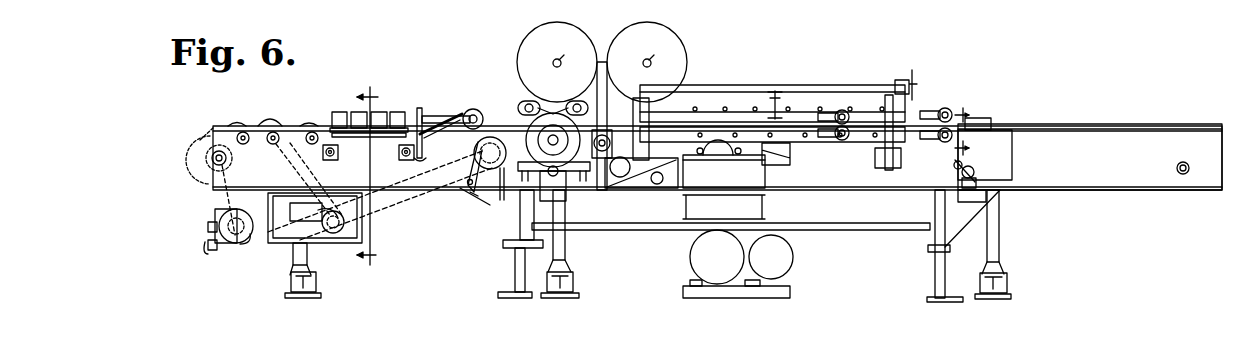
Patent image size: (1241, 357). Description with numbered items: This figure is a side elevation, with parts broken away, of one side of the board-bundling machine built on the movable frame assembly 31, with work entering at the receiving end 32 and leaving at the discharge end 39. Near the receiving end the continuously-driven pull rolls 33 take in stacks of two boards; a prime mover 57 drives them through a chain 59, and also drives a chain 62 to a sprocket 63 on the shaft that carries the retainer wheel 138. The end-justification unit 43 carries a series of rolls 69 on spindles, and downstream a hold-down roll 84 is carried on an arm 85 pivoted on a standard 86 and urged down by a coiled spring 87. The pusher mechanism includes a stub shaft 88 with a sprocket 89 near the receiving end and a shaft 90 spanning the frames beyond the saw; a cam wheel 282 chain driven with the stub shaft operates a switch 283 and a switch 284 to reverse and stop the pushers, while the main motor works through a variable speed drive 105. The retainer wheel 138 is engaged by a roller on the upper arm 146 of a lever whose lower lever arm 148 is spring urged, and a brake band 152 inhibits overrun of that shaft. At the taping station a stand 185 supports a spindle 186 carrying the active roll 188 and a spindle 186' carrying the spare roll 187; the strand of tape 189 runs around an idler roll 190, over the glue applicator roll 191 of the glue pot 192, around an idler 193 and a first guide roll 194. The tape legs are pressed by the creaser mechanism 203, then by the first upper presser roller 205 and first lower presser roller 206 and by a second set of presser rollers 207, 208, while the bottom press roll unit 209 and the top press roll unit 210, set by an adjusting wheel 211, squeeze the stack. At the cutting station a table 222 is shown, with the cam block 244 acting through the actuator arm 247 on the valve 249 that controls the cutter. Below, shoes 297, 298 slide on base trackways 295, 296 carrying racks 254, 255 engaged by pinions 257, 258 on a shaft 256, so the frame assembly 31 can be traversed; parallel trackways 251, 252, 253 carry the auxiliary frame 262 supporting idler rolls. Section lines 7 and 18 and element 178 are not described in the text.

The section line 7- 7 is at (367, 175).
The section line 18- 18 is at (955, 126).
The frame assembly 31 is at (1155, 183).
The receiving end 32 is at (198, 123).
The pull rolls 33 is at (272, 122).
The discharge end 39 is at (1206, 113).
The end-justification unit 43 is at (330, 105).
The prime mover 57 is at (306, 216).
The chain 59 is at (280, 160).
The chain 62 is at (402, 205).
The sprocket 63 is at (474, 140).
The roll 69 is at (401, 110).
The hold-down roll 84 is at (470, 108).
The arm 85 is at (446, 114).
The standard 86 is at (419, 106).
The coiled spring 87 is at (433, 103).
The stub shaft 88 is at (227, 157).
The sprocket 89 is at (192, 166).
The shaft 90 is at (626, 173).
The variable speed drive 105 is at (793, 267).
The retainer wheel 138 is at (522, 128).
The upper arm 146 is at (466, 145).
The lower lever arm 148 is at (468, 193).
The brake band 152 is at (503, 188).
The guide 178 is at (515, 106).
The stand 185 is at (602, 62).
The spindle 186 is at (647, 62).
The spindle 186' is at (560, 51).
The spare roll of bundler tape 187 is at (525, 45).
The active roll 188 is at (683, 48).
The strand of tape 189 is at (670, 160).
The idler roll 190 is at (601, 158).
The glue applicator roll 191 is at (724, 179).
The glue pot 192 is at (763, 175).
The idler 193 is at (796, 149).
The first guide roll 194 is at (676, 105).
The creaser mechanism 203 is at (784, 91).
The first upper presser roller 205 is at (840, 113).
The first lower presser roller 206 is at (842, 142).
The presser roller 207 is at (932, 108).
The presser roller 208 is at (937, 140).
The bottom press roll unit 209 is at (870, 148).
The top press roll unit 210 is at (810, 100).
The adjusting wheel 211 is at (918, 78).
The table 222 is at (1012, 144).
The cam block 244 is at (956, 171).
The actuator arm 247 is at (974, 170).
The valve 249 is at (956, 200).
The trackway 251 is at (317, 281).
The trackway 252 is at (548, 294).
The trackway 253 is at (1006, 281).
The rack 254 is at (504, 250).
The rack 255 is at (970, 252).
The shaft 256 is at (825, 229).
The pinion 257 is at (498, 236).
The pinion 258 is at (987, 243).
The auxiliary frame 262 is at (295, 259).
The cam wheel 282 is at (252, 245).
The switch 283 is at (206, 249).
The switch 284 is at (208, 224).
The base trackway 295 is at (523, 250).
The base trackway 296 is at (940, 272).
The shoe 297 is at (559, 255).
The shoe 298 is at (928, 260).